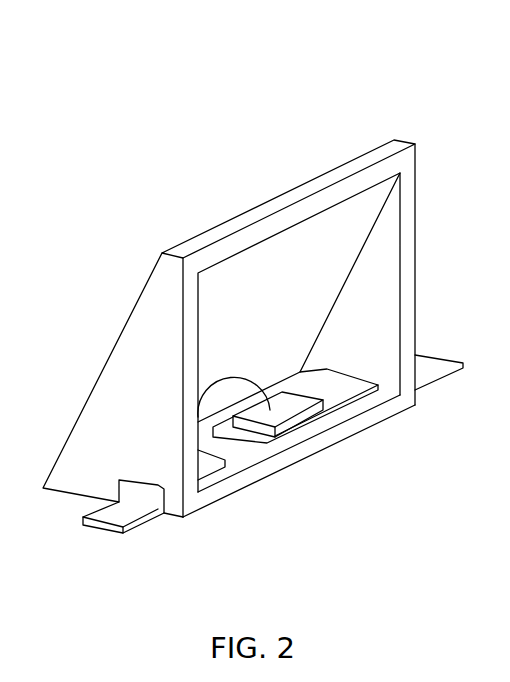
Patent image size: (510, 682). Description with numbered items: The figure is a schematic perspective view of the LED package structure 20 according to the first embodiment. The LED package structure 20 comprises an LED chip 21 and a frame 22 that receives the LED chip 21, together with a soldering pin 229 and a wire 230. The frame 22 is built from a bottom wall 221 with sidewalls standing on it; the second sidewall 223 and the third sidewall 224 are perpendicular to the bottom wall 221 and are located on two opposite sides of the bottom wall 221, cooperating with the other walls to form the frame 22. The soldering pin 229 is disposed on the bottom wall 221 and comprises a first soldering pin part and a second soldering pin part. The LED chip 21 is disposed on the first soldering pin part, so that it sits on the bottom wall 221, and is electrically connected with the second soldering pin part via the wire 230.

The LED package structure 20 is at (297, 31).
The LED chip 21 is at (317, 416).
The frame 22 is at (176, 239).
The bottom wall 221 is at (303, 455).
The second sidewall 223 is at (388, 228).
The third sidewall 224 is at (117, 392).
The soldering pin 229 is at (368, 390).
The wire 230 is at (230, 380).